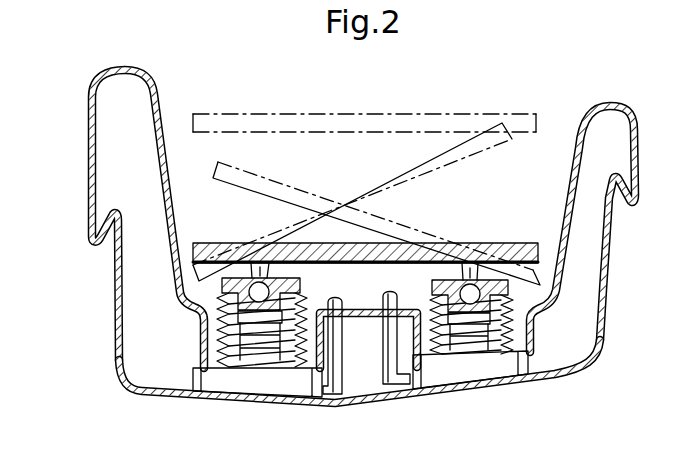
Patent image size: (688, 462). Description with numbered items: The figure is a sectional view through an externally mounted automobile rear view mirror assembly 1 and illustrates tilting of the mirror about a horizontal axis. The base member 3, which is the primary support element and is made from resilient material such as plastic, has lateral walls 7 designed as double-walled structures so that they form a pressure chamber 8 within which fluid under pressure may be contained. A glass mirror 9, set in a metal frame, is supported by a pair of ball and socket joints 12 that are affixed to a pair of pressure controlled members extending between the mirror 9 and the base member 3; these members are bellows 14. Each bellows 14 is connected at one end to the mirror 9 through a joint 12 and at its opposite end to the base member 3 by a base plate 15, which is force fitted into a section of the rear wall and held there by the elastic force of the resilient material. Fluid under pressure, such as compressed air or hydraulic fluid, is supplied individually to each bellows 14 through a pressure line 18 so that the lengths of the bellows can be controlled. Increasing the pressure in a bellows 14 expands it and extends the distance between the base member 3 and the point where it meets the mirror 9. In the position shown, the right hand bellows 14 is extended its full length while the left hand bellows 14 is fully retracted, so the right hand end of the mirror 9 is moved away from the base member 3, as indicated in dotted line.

The rear view mirror assembly 1 is at (250, 87).
The base member 3 is at (174, 410).
The lateral walls 7 is at (117, 311).
The pressure chamber 8 is at (150, 266).
The glass mirror 9 is at (460, 113).
The ball and socket joints 12 is at (260, 282).
The bellows 14 is at (206, 337).
The base plate 15 is at (275, 387).
The pressure line 18 is at (383, 297).